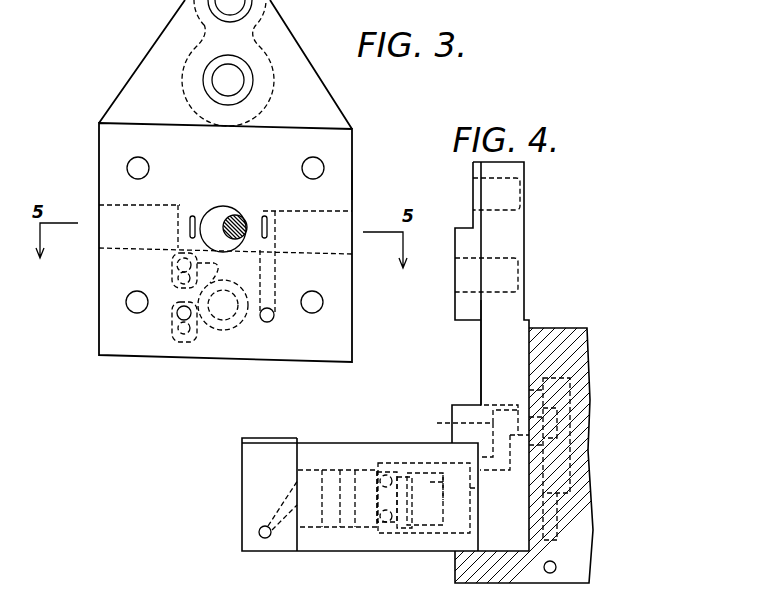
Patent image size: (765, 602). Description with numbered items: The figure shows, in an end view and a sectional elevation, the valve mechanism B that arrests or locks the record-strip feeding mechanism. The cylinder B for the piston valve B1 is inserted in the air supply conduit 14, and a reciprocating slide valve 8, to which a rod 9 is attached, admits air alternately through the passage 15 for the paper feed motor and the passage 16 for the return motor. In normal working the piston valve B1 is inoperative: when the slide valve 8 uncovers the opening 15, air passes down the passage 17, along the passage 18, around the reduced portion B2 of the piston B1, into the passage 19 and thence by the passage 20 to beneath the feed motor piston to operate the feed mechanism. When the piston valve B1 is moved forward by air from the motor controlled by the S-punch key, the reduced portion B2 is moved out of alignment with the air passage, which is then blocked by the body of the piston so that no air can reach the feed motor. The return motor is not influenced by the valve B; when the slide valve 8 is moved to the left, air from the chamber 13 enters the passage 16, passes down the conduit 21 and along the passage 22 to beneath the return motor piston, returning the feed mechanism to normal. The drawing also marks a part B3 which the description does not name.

In FIG. 3, the valve mechanism B is at (352, 177).
In FIG. 4, the valve mechanism B is at (460, 352).
In FIG. 3, the piston valve B1 is at (223, 322).
In FIG. 4, the piston valve B1 is at (356, 478).
In FIG. 3, the reduced portion of the piston B2 is at (237, 323).
In FIG. 4, the reduced portion of the piston B2 is at (380, 497).
In FIG. 4, the passage in base block B3 is at (259, 528).
In FIG. 4, the slide valve 8 is at (590, 418).
In FIG. 3, the rod 9 is at (236, 215).
In FIG. 4, the chamber 13 is at (590, 392).
In FIG. 4, the air supply conduit 14 is at (590, 484).
In FIG. 3, the passage 15 is at (193, 215).
In FIG. 4, the passage 15 is at (517, 412).
In FIG. 3, the passage 16 is at (266, 214).
In FIG. 3, the passage 17 is at (178, 230).
In FIG. 4, the passage 17 is at (432, 424).
In FIG. 3, the passage 18 is at (172, 277).
In FIG. 4, the passage 18 is at (395, 462).
In FIG. 3, the passage 19 is at (203, 333).
In FIG. 4, the passage 19 is at (453, 528).
In FIG. 3, the passage 20 is at (178, 316).
In FIG. 4, the passage 20 is at (590, 535).
In FIG. 3, the conduit 21 is at (275, 280).
In FIG. 3, the passage 22 is at (272, 320).